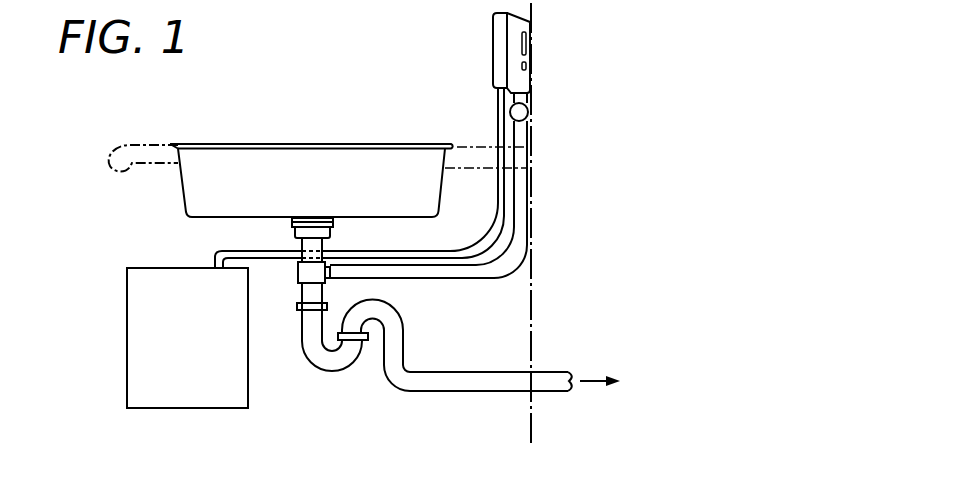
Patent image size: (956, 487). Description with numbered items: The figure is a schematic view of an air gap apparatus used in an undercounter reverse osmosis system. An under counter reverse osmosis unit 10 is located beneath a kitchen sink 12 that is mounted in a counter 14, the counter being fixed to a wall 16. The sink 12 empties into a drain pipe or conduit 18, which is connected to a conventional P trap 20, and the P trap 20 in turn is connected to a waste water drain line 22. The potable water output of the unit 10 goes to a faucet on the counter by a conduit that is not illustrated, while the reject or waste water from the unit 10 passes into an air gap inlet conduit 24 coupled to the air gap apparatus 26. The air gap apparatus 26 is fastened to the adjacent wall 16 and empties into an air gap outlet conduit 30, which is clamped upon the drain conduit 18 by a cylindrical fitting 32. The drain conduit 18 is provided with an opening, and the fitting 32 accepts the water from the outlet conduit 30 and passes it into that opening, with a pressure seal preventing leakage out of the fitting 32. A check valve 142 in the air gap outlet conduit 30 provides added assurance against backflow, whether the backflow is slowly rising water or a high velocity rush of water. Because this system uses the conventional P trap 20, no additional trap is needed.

The reverse osmosis unit 10 is at (126, 299).
The kitchen sink 12 is at (183, 194).
The counter 14 is at (106, 162).
The wall 16 is at (527, 288).
The drain pipe 18 is at (313, 246).
The P trap 20 is at (316, 355).
The waste water drain line 22 is at (455, 381).
The air gap inlet conduit 24 is at (378, 256).
The air gap apparatus 26 is at (532, 77).
The air gap outlet conduit 30 is at (418, 268).
The cylindrical fitting 32 is at (304, 272).
The check valve 142 is at (531, 115).